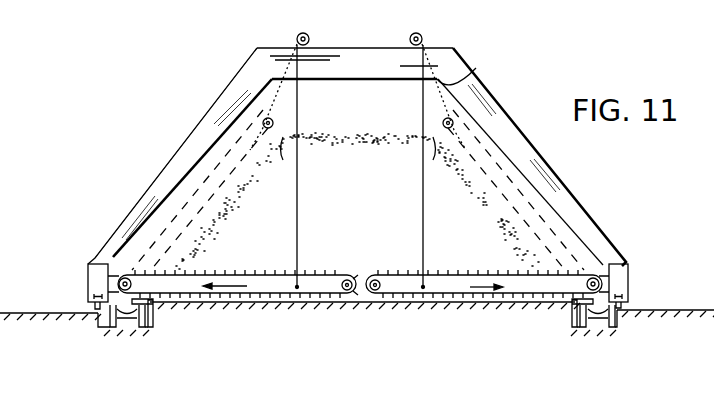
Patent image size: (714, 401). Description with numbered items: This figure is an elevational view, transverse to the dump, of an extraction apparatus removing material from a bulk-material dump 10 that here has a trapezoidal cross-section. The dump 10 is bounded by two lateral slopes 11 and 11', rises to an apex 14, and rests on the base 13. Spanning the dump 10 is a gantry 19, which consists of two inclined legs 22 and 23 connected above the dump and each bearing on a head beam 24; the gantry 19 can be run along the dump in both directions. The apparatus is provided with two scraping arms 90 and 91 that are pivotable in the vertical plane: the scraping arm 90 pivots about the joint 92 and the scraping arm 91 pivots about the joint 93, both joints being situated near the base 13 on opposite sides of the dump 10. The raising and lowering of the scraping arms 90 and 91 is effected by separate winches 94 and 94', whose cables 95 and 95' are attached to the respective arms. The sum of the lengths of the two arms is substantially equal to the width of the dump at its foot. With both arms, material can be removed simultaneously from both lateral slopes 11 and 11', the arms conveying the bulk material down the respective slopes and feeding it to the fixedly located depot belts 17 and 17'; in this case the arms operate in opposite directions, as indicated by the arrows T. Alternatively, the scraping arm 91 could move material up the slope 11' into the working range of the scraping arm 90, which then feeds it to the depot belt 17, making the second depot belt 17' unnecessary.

The bulk-material dump 10 is at (359, 131).
The lateral slope 11 is at (202, 190).
The lateral slope 11' is at (515, 190).
The base 13 is at (357, 303).
The apex 14 is at (280, 140).
The depot belt 17 is at (125, 342).
The depot belt 17' is at (595, 342).
The gantry 19 is at (189, 127).
The inclined leg 22 is at (171, 157).
The inclined leg 23 is at (507, 132).
The head beam 24 is at (88, 278).
The scraping arm 90 is at (270, 297).
The scraping arm 91 is at (533, 297).
The joint 92 is at (122, 279).
The joint 93 is at (596, 279).
The winch 94 is at (275, 35).
The winch 94' is at (446, 34).
The cable 95 is at (302, 166).
The cable 95' is at (466, 166).
The arrows T is at (226, 298).